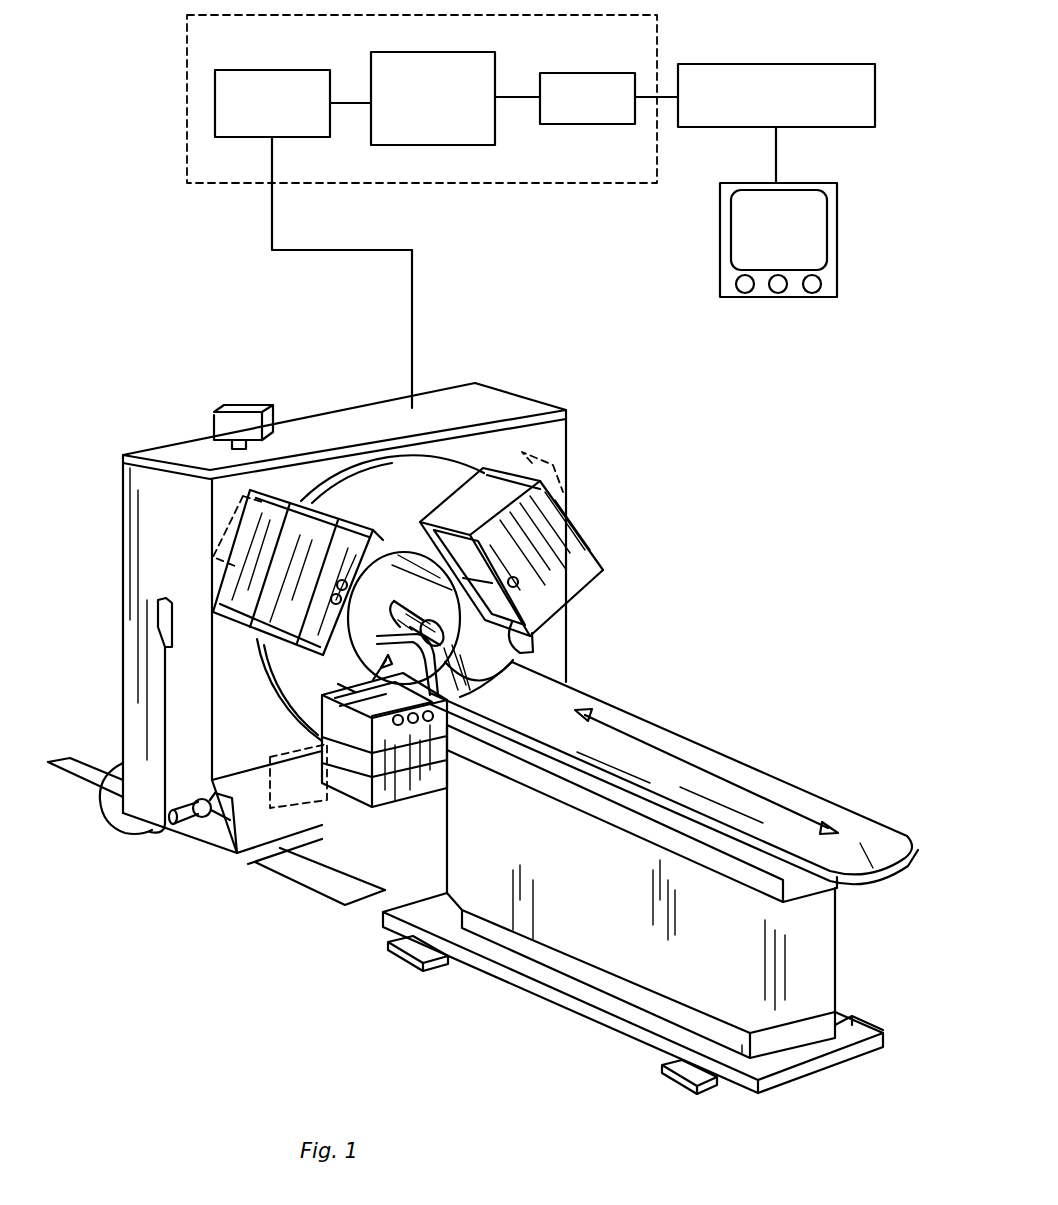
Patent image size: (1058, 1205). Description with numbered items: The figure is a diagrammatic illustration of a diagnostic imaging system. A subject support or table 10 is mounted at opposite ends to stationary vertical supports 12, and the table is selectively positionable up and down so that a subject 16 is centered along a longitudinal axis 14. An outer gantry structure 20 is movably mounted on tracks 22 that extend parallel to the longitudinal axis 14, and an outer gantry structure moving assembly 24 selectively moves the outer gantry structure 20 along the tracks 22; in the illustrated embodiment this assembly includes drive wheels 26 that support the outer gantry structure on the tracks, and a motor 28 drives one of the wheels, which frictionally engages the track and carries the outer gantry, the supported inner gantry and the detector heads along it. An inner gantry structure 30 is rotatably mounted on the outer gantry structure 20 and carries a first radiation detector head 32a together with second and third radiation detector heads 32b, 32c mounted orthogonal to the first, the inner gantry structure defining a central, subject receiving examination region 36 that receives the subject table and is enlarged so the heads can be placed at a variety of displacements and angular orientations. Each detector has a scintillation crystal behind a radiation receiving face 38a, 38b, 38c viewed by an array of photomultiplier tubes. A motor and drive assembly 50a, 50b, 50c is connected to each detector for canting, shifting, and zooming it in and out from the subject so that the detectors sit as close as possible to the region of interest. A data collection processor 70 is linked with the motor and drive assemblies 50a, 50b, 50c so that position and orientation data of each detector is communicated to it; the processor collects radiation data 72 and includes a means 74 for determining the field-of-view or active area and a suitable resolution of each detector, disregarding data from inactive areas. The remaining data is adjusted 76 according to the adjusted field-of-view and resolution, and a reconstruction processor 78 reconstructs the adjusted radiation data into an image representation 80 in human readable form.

The subject support or table 10 is at (674, 773).
The vertical supports 12 is at (828, 962).
The longitudinal axis 14 is at (697, 767).
The subject 16 is at (424, 608).
The outer gantry structure 20 is at (497, 400).
The tracks 22 is at (345, 905).
The outer gantry structure moving assembly 24 is at (170, 840).
The drive wheels 26 is at (226, 815).
The motor 28 is at (213, 840).
The inner gantry structure 30 is at (423, 485).
The first radiation detector head 32a is at (558, 553).
The second radiation detector head 32b is at (233, 583).
The third radiation detector head 32c is at (430, 788).
The examination region 36 is at (370, 725).
The radiation receiving face 38a is at (533, 652).
The radiation receiving face 38b is at (384, 540).
The radiation receiving face 38c is at (355, 692).
The motor and drive assembly 50a is at (548, 456).
The motor and drive assembly 50b is at (228, 522).
The motor and drive assembly 50c is at (248, 790).
The data collection processor 70 is at (187, 80).
The radiation data collection 72 is at (287, 70).
The field-of-view determining means 74 is at (458, 53).
The radiation data adjustment 76 is at (600, 72).
The reconstruction processor 78 is at (778, 63).
The image representation 80 is at (838, 237).